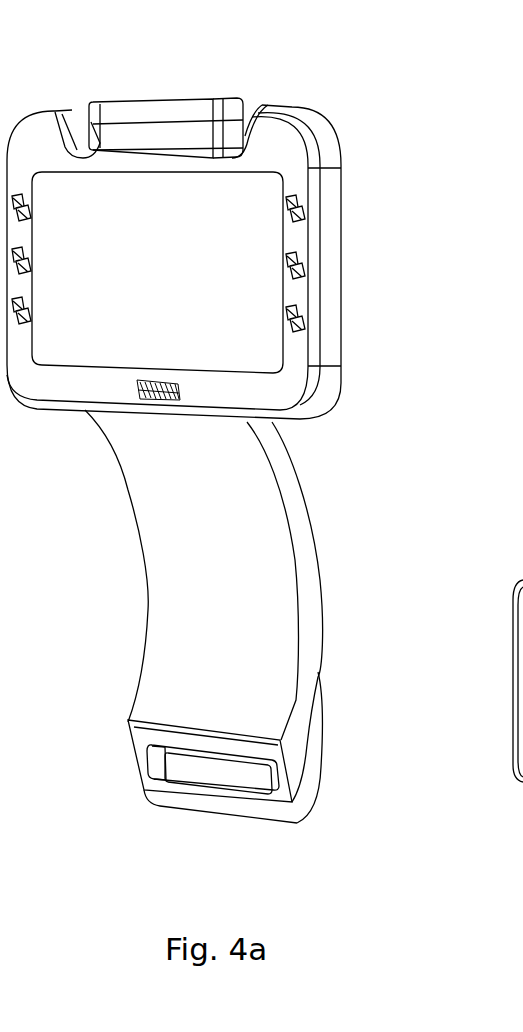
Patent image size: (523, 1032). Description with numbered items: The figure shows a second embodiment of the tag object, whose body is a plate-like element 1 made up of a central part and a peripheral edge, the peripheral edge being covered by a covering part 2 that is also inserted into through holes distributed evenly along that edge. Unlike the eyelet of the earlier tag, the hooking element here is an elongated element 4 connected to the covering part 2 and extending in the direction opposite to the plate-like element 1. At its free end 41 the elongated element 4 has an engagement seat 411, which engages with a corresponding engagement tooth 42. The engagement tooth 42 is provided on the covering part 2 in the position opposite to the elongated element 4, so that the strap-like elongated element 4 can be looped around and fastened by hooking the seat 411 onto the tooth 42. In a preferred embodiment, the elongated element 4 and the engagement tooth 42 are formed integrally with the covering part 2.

The plate-like element 1 is at (250, 323).
The covering part 2 is at (340, 205).
The elongated element 4 is at (305, 562).
The free end 41 is at (137, 758).
The engagement seat 411 is at (229, 787).
The engagement tooth 42 is at (170, 97).